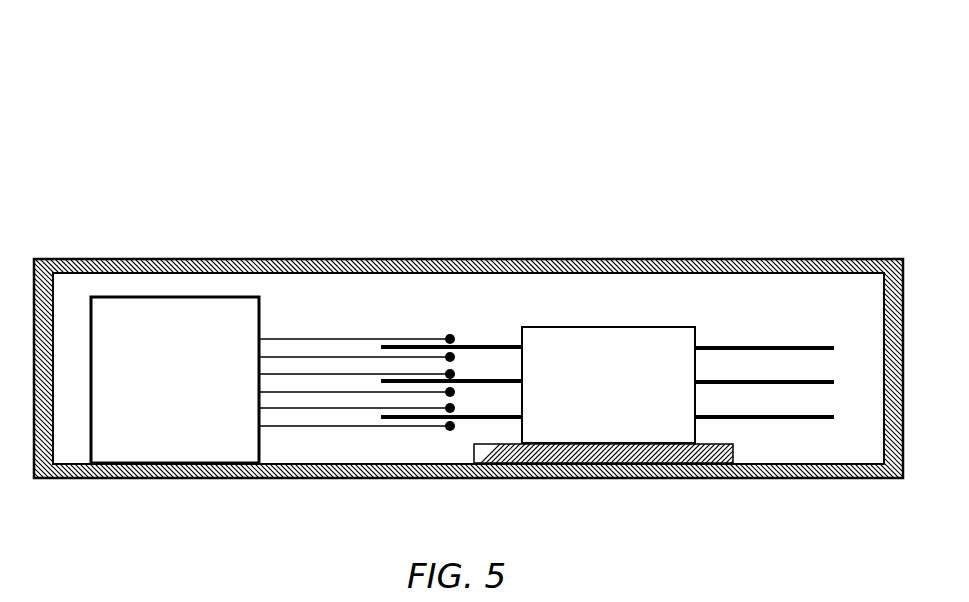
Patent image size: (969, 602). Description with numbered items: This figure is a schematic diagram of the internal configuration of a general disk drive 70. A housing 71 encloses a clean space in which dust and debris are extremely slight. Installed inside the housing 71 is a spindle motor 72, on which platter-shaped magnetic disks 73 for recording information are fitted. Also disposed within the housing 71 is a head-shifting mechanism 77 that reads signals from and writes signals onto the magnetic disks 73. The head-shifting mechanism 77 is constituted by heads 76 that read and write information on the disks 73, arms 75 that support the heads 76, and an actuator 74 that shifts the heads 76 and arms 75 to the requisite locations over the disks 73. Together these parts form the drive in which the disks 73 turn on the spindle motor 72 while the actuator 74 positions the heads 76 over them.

The disk drive 70 is at (515, 72).
The housing 71 is at (683, 257).
The spindle motor 72 is at (597, 382).
The magnetic disks 73 is at (763, 387).
The actuator 74 is at (148, 332).
The arms 75 is at (307, 357).
The heads 76 is at (453, 354).
The head-shifting mechanism 77 is at (372, 328).